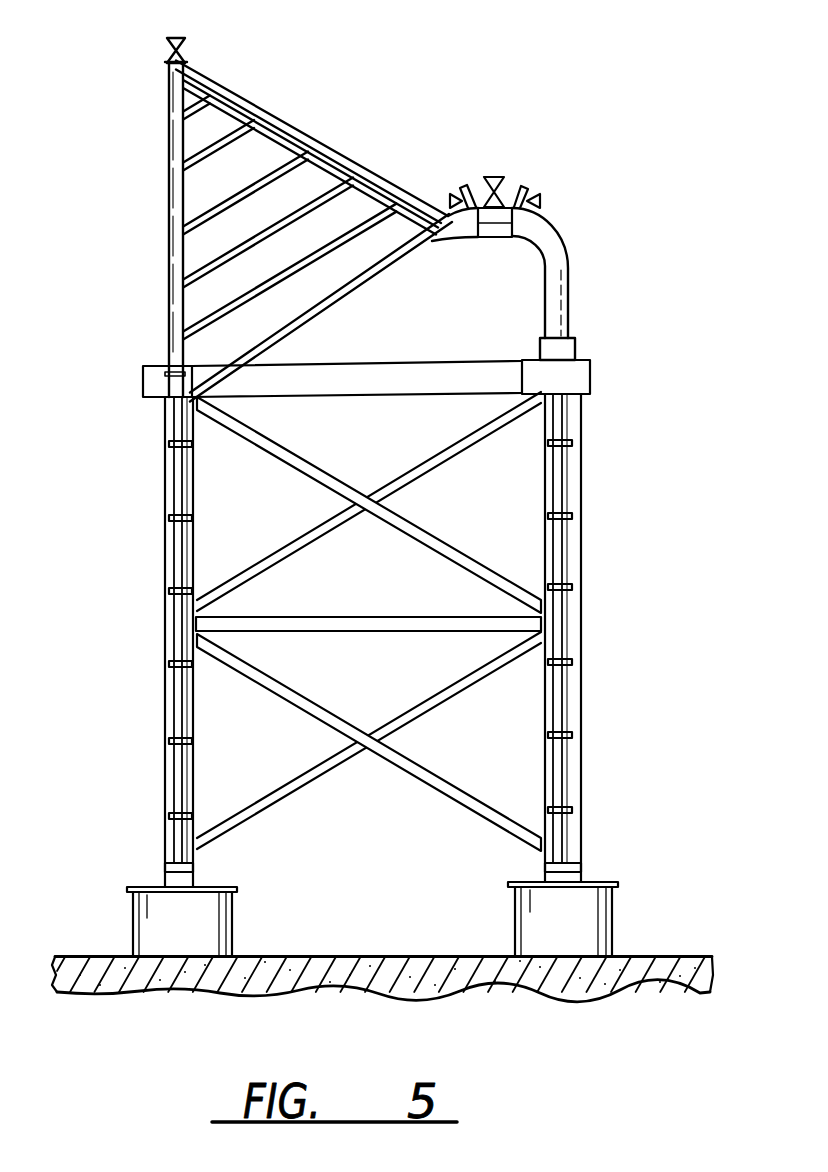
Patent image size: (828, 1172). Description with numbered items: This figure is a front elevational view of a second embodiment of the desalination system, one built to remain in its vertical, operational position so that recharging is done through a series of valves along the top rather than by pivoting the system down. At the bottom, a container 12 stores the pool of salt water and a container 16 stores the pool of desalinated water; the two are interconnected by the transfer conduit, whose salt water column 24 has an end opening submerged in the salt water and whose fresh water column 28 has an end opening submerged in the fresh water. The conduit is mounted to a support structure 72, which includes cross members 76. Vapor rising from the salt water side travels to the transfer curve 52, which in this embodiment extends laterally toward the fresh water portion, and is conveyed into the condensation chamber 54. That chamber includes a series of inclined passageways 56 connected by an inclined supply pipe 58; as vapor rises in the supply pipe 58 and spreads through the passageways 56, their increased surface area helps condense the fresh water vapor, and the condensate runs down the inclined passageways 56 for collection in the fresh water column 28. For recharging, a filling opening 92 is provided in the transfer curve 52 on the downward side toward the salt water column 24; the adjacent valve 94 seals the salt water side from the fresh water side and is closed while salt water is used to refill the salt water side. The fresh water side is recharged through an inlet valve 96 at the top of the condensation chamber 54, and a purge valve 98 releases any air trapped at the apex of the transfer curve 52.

The container 12 is at (615, 910).
The container 16 is at (235, 918).
The salt water column 24 is at (564, 565).
The fresh water column 28 is at (178, 549).
The transfer curve 52 is at (558, 250).
The condensation chamber 54 is at (249, 206).
The inclined passageways 56 is at (233, 126).
The inclined supply pipe 58 is at (300, 134).
The support structure 72 is at (408, 368).
The cross members 76 is at (436, 463).
The filling opening 92 is at (528, 189).
The valve 94 is at (496, 178).
The inlet valve 96 is at (186, 44).
The purge valve 98 is at (464, 188).